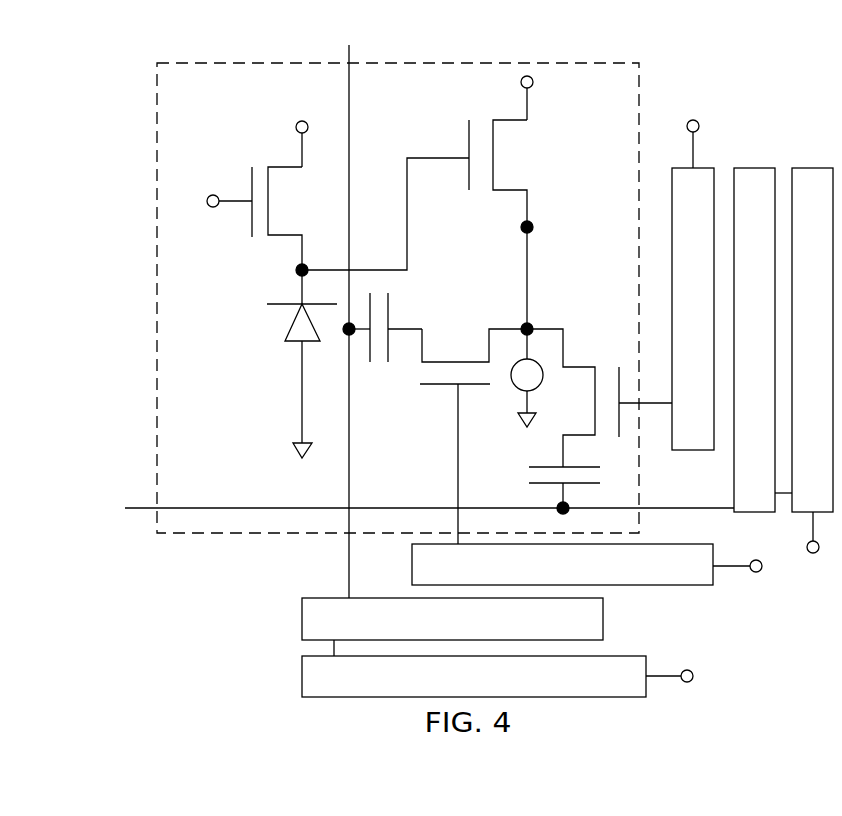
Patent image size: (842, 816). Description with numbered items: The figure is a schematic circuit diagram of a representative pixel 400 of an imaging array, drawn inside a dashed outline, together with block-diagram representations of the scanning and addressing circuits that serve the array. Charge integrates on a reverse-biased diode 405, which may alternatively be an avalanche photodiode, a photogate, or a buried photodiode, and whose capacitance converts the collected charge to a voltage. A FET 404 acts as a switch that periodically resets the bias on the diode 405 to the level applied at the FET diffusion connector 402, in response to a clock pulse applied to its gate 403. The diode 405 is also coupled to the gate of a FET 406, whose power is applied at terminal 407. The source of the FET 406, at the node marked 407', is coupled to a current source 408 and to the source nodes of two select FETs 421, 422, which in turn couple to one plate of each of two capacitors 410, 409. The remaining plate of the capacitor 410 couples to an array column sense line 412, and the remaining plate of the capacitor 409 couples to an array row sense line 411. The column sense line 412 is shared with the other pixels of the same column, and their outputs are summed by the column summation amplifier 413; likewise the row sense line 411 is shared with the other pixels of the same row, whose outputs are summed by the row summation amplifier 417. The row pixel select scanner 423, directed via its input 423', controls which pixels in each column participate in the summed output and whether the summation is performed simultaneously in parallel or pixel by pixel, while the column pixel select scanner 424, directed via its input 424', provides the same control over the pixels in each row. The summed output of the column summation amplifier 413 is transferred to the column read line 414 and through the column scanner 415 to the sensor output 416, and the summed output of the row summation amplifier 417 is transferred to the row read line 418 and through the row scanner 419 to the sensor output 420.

The pixel 400 is at (180, 52).
The FET diffusion connector 402 is at (302, 121).
The gate 403 is at (210, 196).
The FET 404 is at (273, 208).
The reverse-biased diode 405 is at (277, 315).
The FET 406 is at (497, 160).
The power connection 407 is at (573, 96).
The source node coupling 407' is at (572, 273).
The current source 408 is at (513, 387).
The capacitor 409 is at (533, 479).
The capacitor 410 is at (373, 368).
The array row sense line 411 is at (257, 506).
The array column sense line 412 is at (349, 222).
The column summation amplifier 413 is at (302, 627).
The column read line 414 is at (332, 648).
The column scanner 415 is at (302, 675).
The sensor output 416 is at (692, 671).
The row summation amplifier 417 is at (755, 168).
The row read line 418 is at (784, 496).
The row scanner 419 is at (817, 168).
The sensor output 420 is at (815, 553).
The select FET 421 is at (460, 357).
The select FET 422 is at (593, 393).
The row pixel select scanner 423 is at (693, 335).
The input 423' is at (710, 113).
The column pixel select scanner 424 is at (536, 567).
The input 424' is at (742, 590).